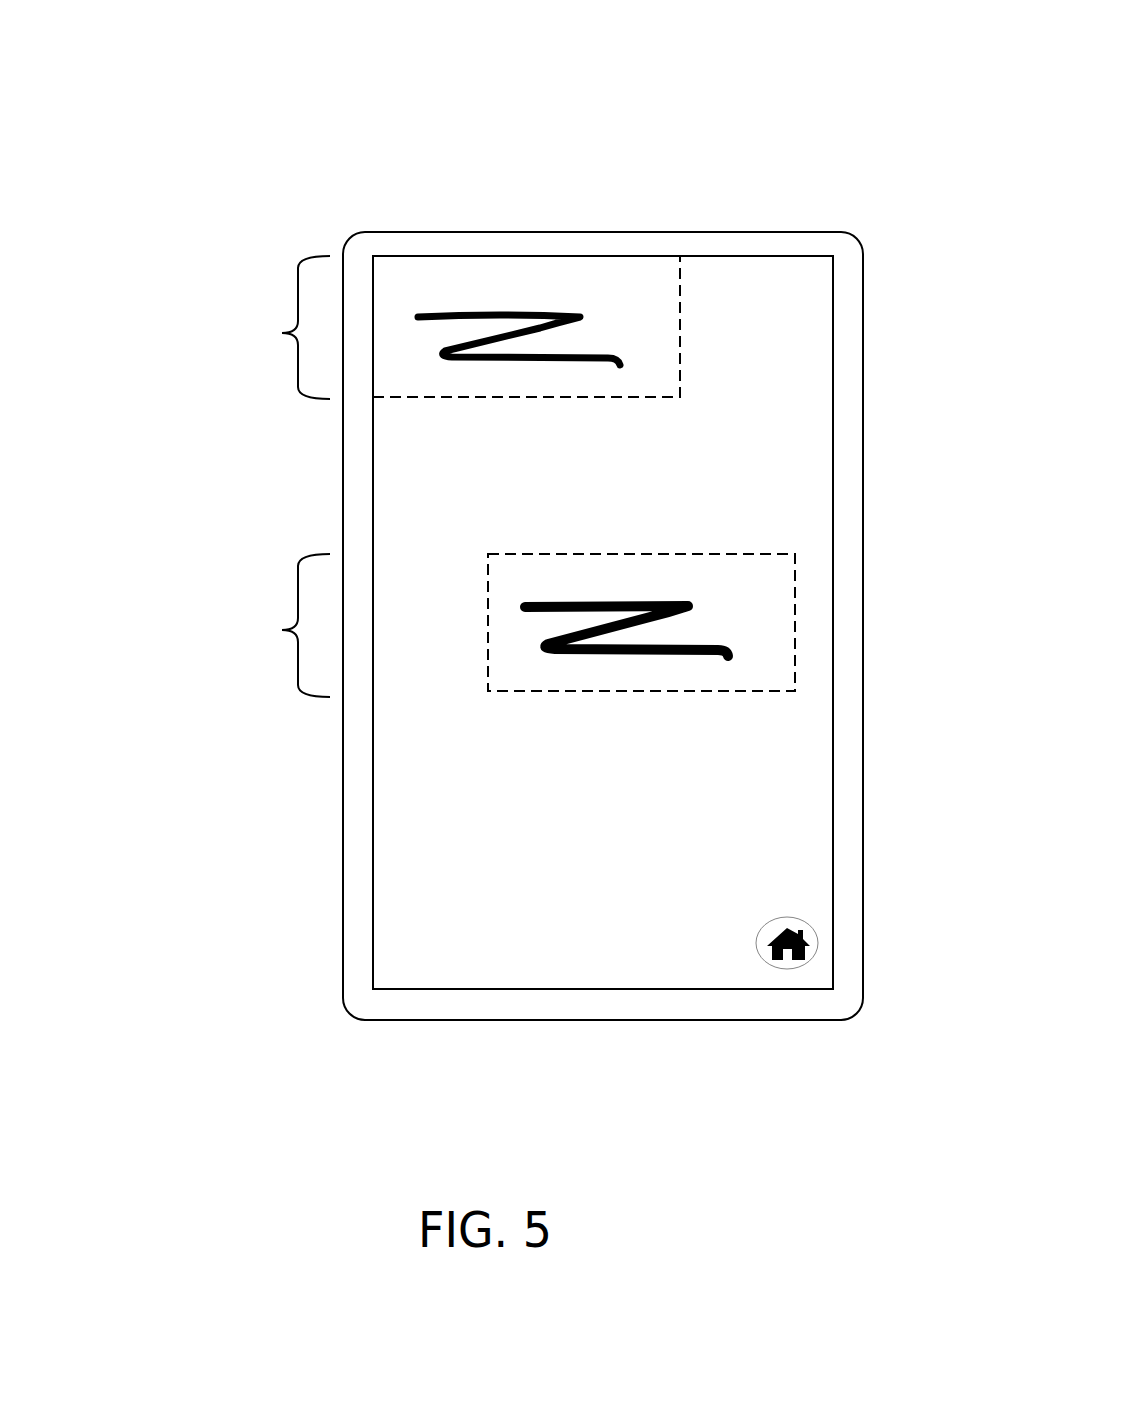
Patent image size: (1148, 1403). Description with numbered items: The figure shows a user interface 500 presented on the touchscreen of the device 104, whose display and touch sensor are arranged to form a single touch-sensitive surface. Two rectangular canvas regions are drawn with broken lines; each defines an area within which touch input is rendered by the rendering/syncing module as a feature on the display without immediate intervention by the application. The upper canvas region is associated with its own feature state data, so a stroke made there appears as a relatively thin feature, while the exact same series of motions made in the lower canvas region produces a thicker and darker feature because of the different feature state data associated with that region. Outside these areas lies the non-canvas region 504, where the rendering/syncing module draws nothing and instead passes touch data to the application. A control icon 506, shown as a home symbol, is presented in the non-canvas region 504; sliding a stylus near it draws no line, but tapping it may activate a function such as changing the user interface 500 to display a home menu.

The user interface 500 is at (740, 55).
The device 104 is at (757, 231).
The non-canvas region 504 is at (398, 918).
The control icon 506 is at (765, 965).